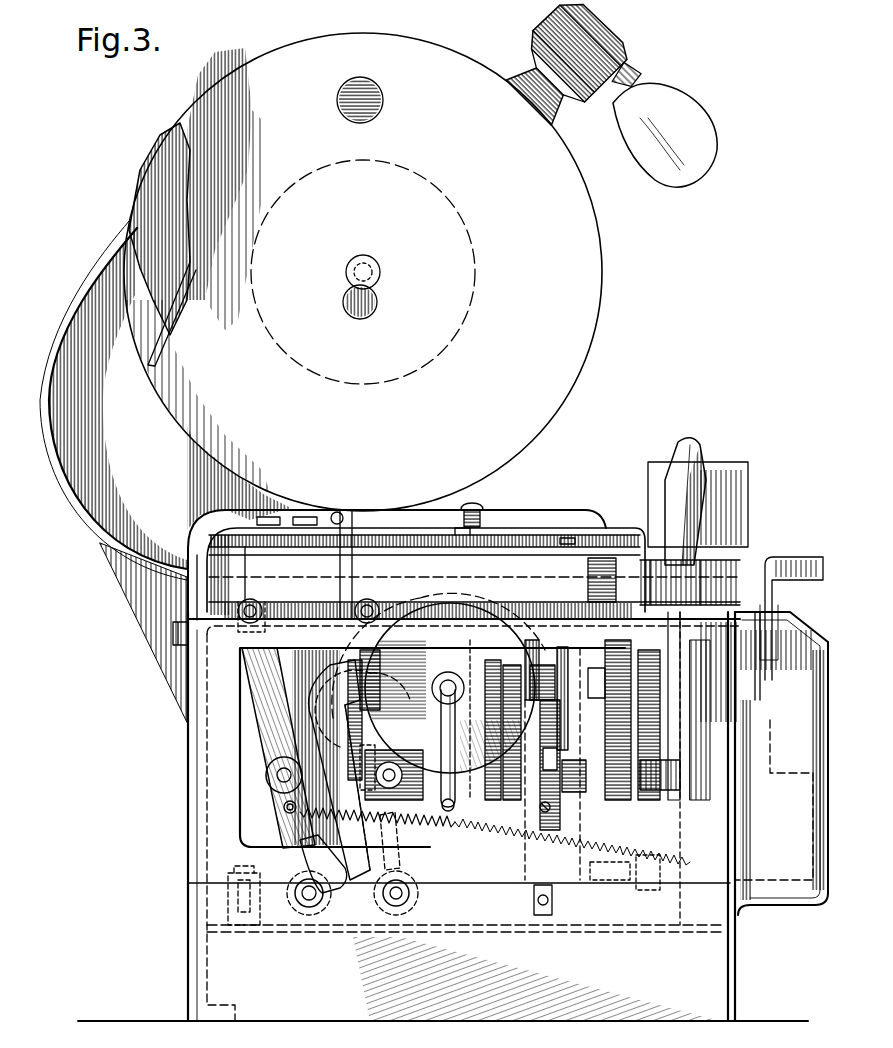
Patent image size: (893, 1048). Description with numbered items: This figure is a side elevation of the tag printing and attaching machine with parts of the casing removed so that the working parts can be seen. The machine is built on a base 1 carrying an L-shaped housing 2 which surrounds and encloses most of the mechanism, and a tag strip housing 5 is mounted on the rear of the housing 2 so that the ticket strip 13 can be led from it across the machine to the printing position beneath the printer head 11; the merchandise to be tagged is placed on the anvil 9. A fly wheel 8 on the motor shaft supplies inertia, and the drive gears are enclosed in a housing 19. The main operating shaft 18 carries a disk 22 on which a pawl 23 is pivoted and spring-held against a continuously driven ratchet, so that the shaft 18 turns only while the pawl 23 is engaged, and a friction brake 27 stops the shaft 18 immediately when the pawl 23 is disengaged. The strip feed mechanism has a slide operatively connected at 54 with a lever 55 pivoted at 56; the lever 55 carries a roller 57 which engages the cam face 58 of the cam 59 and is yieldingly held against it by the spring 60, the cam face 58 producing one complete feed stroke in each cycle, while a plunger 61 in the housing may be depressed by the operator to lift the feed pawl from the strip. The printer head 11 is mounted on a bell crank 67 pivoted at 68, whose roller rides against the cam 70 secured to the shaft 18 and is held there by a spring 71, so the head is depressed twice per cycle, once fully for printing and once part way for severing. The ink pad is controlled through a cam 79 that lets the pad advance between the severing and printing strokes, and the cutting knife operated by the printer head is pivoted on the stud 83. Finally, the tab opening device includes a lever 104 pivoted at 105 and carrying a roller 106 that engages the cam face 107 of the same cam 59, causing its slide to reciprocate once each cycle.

The base 1 is at (710, 978).
The housing 2 is at (464, 571).
The tag strip housing 5 is at (420, 265).
The fly wheel 8 is at (452, 707).
The anvil 9 is at (806, 622).
The printer head 11 is at (748, 500).
The ticket strip 13 is at (82, 537).
The main operating shaft 18 is at (536, 772).
The housing 19 is at (408, 692).
The disk 22 is at (530, 763).
The pawl 23 is at (492, 800).
The friction brake 27 is at (552, 807).
The connection 54 is at (246, 624).
The lever 55 is at (284, 765).
The pivot 56 is at (296, 897).
The roller 57 is at (272, 798).
The cam face 58 is at (285, 748).
The cam 59 is at (339, 770).
The spring 60 is at (322, 873).
The plunger 61 is at (485, 508).
The bell crank 67 is at (680, 500).
The pivot 68 is at (598, 570).
The cam 70 is at (652, 754).
The spring 71 is at (312, 820).
The cam 79 is at (618, 690).
The stud 83 is at (768, 560).
The lever 104 is at (438, 655).
The pivot 105 is at (410, 896).
The roller 106 is at (400, 767).
The cam face 107 is at (372, 746).